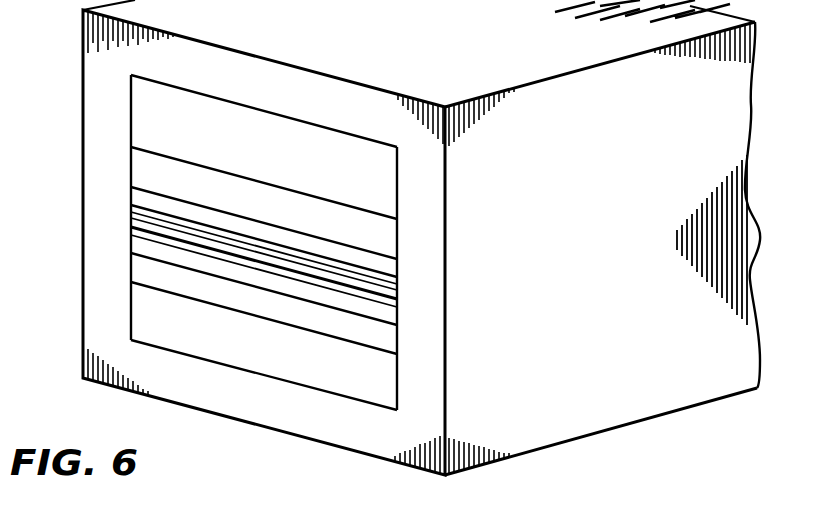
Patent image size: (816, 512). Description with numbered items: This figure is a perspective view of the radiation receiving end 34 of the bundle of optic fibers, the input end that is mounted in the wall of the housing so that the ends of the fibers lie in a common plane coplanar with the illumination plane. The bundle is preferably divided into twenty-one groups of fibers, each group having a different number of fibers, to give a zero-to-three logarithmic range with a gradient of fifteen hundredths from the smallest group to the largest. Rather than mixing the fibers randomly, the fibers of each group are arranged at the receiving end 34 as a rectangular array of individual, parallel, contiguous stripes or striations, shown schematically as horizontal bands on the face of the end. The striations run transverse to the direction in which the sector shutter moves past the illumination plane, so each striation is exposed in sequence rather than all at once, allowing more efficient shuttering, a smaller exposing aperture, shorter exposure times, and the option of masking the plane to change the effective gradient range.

The radiation receiving end 34 is at (671, 403).